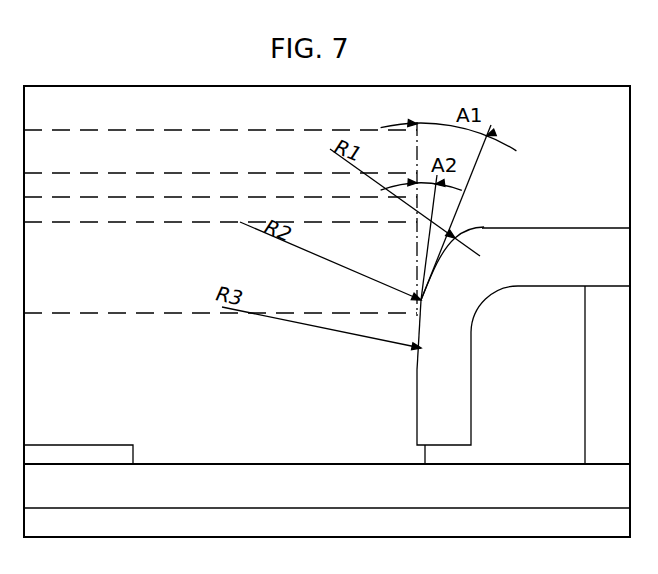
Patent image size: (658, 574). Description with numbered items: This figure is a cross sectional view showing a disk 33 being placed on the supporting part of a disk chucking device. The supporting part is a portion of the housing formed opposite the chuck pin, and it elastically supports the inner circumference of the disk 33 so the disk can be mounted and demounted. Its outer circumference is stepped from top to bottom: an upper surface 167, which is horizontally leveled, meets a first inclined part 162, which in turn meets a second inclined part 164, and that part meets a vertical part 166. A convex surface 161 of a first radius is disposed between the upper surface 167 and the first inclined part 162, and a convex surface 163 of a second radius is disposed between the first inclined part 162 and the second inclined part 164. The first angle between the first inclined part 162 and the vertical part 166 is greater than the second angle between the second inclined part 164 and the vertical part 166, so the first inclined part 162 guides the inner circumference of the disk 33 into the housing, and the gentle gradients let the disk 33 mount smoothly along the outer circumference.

The disk 33 is at (131, 295).
The convex surface 161 is at (458, 242).
The first inclined part 162 is at (435, 270).
The convex surface 163 is at (425, 305).
The second inclined part 164 is at (420, 330).
The vertical part 166 is at (418, 418).
The upper surface 167 is at (566, 228).